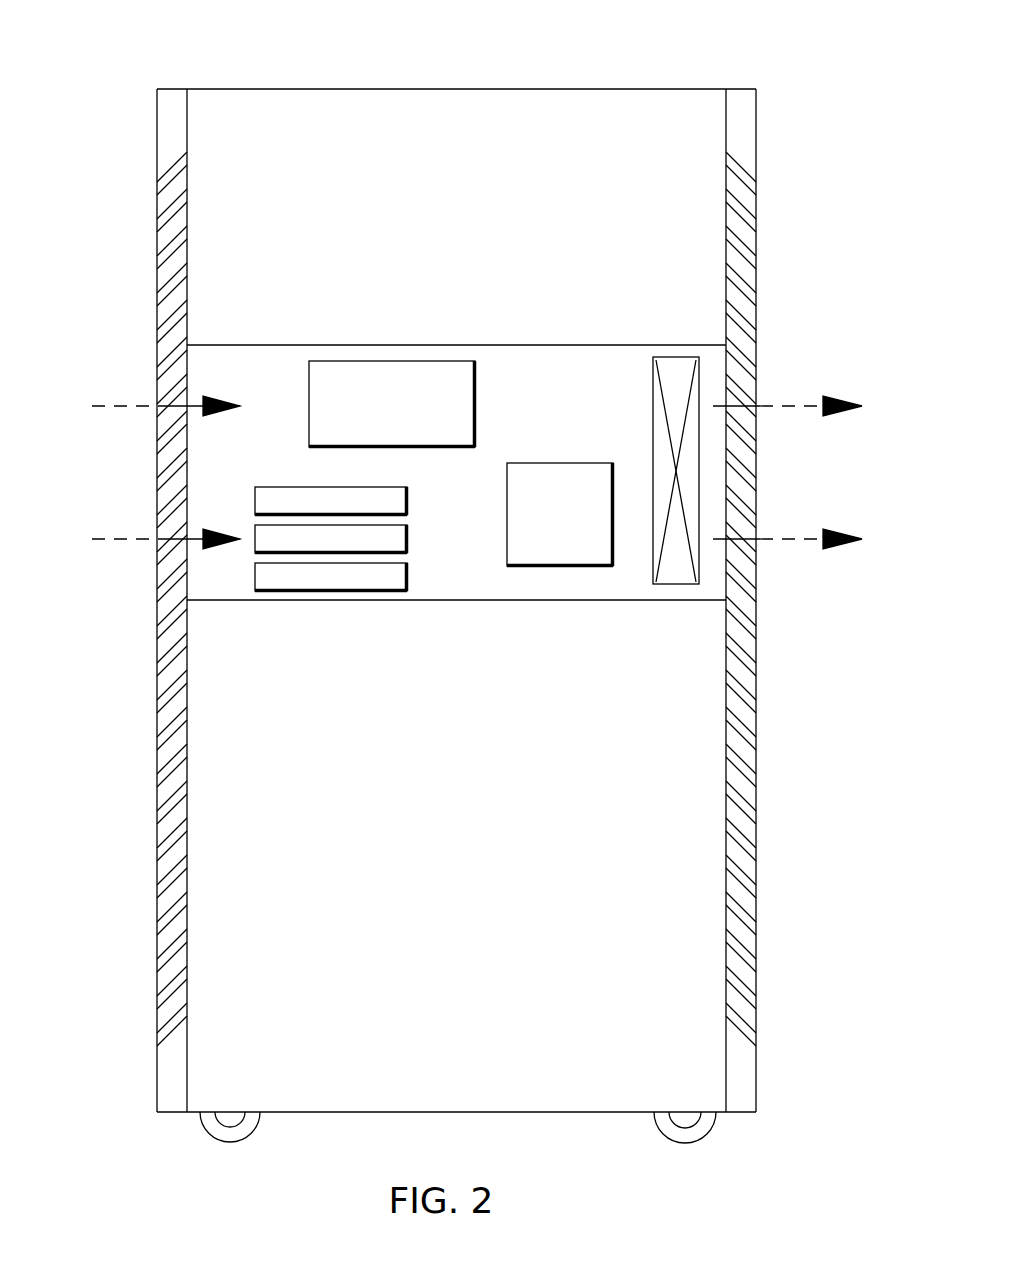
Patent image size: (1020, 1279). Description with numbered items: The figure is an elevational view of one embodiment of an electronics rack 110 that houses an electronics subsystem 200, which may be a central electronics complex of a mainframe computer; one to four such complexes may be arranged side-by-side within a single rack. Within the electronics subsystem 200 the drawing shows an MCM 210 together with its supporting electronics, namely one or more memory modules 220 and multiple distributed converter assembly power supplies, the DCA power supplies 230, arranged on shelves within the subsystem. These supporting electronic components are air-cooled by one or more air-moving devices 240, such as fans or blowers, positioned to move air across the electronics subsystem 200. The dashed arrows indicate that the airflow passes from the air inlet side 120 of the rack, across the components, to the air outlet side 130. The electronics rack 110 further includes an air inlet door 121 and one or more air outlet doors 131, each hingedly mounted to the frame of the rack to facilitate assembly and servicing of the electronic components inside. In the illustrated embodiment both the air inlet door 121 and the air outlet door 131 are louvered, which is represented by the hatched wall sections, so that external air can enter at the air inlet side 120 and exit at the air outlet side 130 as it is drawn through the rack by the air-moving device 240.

The electronics rack 110 is at (349, 25).
The air inlet side 120 is at (157, 236).
The air inlet door 121 is at (172, 89).
The air outlet side 130 is at (756, 230).
The air outlet door 131 is at (742, 89).
The electronics subsystem 200 is at (577, 425).
The MCM 210 is at (590, 566).
The memory module 220 is at (380, 361).
The distributed converter assembly (DCA) power supply 230 is at (408, 500).
The air-moving device 240 is at (653, 392).